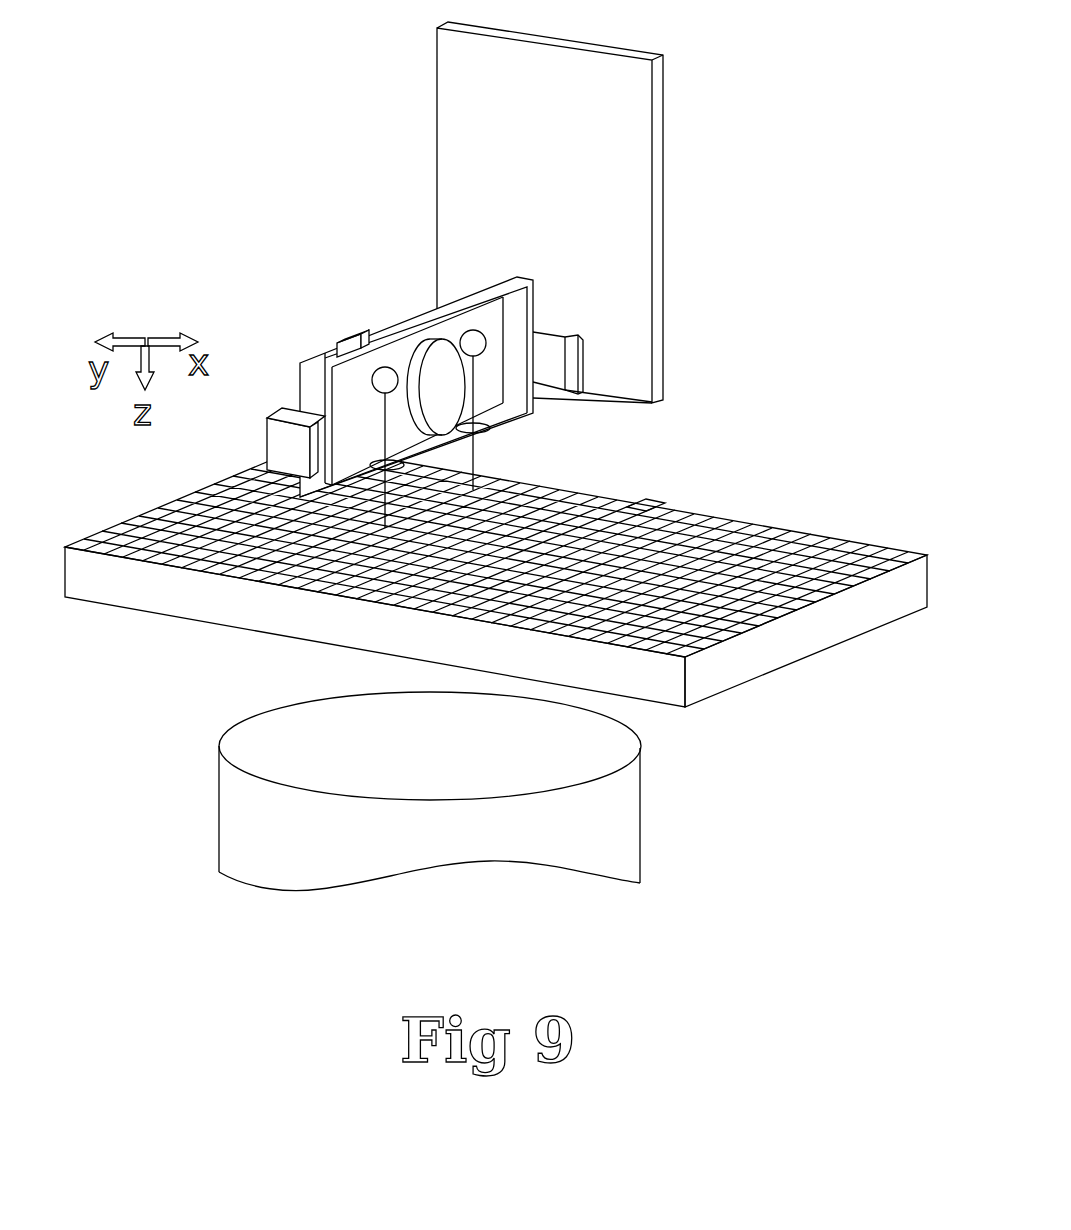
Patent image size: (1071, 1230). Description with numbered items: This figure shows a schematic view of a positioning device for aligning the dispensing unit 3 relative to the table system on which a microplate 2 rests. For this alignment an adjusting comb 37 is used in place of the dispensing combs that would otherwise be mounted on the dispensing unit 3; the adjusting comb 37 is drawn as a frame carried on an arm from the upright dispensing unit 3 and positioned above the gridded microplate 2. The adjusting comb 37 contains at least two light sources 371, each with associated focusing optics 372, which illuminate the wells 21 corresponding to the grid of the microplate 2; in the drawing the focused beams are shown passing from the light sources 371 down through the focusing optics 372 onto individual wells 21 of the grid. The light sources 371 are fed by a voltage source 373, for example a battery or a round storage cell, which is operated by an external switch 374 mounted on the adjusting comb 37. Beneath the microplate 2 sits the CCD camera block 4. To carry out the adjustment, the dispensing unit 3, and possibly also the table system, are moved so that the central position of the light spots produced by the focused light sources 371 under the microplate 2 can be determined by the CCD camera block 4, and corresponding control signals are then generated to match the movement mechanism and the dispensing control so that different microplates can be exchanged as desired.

The microplate 2 is at (724, 676).
The wells 21 is at (637, 516).
The dispensing unit 3 is at (432, 170).
The adjusting comb 37 is at (497, 290).
The light sources 371 is at (385, 380).
The focusing optics 372 is at (403, 462).
The voltage source 373 is at (447, 407).
The external switch 374 is at (367, 340).
The CCD camera block 4 is at (613, 822).